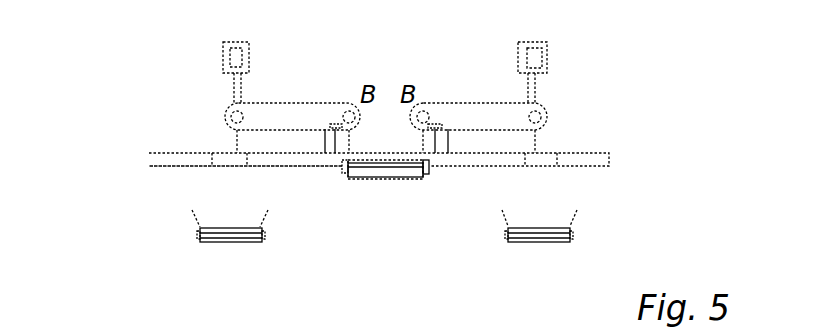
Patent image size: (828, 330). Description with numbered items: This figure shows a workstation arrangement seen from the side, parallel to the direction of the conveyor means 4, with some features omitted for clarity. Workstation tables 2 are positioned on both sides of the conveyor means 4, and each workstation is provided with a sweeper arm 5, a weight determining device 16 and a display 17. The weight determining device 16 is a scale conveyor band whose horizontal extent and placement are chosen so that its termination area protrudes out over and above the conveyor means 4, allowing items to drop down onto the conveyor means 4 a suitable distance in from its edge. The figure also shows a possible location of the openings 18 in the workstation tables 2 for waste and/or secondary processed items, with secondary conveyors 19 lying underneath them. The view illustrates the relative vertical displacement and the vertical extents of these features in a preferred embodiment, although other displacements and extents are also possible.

The workstation table 2 is at (177, 157).
The conveyor means 4 is at (392, 167).
The sweeper arm 5 is at (327, 143).
The weight determining device 16 is at (297, 100).
The display 17 is at (223, 55).
The opening 18 is at (223, 160).
The secondary conveyor 19 is at (215, 233).